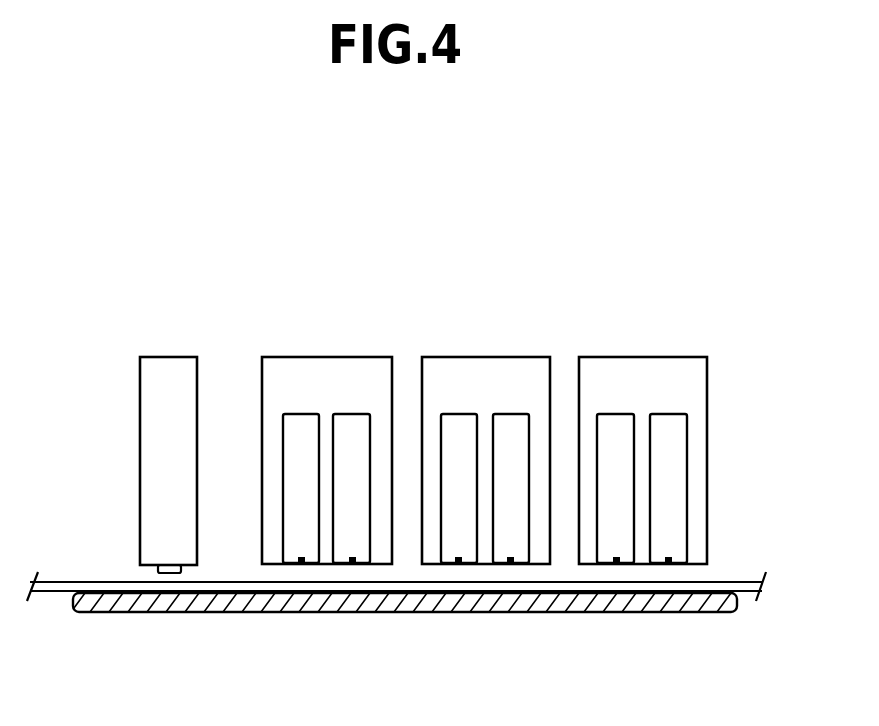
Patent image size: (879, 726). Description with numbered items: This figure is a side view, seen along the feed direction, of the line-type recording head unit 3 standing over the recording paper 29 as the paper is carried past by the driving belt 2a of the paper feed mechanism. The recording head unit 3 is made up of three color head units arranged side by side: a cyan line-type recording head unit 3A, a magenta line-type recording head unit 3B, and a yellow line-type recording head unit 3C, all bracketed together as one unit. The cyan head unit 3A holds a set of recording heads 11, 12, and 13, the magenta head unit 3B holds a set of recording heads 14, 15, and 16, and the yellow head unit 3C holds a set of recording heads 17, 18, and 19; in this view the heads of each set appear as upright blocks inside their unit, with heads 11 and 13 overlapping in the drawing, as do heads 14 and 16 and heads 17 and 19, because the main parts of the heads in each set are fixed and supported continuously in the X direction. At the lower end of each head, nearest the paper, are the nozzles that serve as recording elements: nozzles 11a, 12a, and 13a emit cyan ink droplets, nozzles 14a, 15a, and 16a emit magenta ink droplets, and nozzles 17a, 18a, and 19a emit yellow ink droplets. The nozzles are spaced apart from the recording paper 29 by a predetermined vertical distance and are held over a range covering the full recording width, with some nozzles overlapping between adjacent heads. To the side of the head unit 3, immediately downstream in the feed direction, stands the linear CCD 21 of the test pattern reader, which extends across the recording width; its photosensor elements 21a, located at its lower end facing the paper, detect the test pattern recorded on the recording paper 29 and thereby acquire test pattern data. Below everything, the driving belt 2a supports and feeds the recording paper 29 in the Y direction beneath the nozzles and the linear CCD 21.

The line-type recording head unit 3 is at (253, 237).
The C line-type recording head unit 3A is at (282, 357).
The M line-type recording head unit 3B is at (438, 357).
The Y line-type recording head unit 3C is at (597, 357).
The linear CCD 21 is at (170, 357).
The photosensor elements 21a is at (170, 573).
The recording head 11 is at (330, 422).
The recording head 13 is at (303, 414).
The recording head 12 is at (355, 414).
The recording head 14 is at (488, 422).
The recording head 16 is at (462, 414).
The recording head 15 is at (512, 414).
The recording head 17 is at (645, 422).
The recording head 19 is at (620, 414).
The recording head 18 is at (670, 414).
The nozzles 11a is at (280, 623).
The nozzles 13a is at (302, 564).
The nozzles 12a is at (353, 564).
The nozzles 14a is at (438, 623).
The nozzles 16a is at (458, 564).
The nozzles 15a is at (508, 564).
The nozzles 17a is at (595, 623).
The nozzles 19a is at (617, 564).
The nozzles 18a is at (668, 564).
The recording paper 29 is at (742, 582).
The driving belt 2a is at (718, 612).